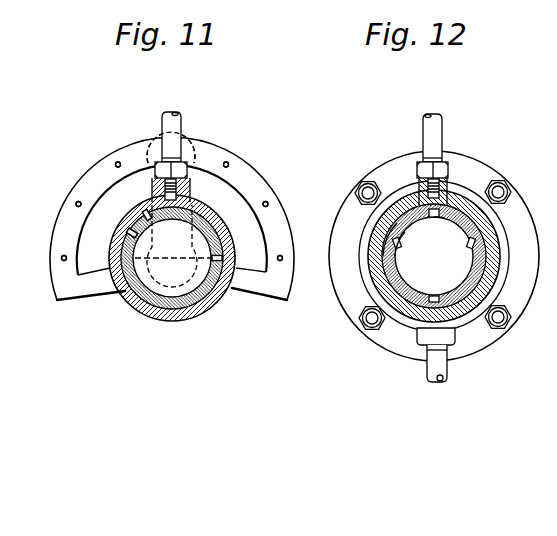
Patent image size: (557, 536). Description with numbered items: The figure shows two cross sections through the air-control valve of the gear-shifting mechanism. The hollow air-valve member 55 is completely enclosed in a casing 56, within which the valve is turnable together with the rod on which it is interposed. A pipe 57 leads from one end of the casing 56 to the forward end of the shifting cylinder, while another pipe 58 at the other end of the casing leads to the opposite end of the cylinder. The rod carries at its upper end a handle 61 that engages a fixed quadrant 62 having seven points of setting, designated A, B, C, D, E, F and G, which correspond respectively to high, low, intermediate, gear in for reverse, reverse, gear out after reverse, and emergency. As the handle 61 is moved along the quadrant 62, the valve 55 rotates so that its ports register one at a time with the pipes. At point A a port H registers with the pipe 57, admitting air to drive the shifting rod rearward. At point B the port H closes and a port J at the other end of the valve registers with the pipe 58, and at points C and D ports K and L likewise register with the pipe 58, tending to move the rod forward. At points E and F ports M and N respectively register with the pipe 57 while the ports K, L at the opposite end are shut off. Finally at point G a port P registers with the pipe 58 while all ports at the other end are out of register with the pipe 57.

In FIG. 11, the air-valve member 55 is at (138, 303).
In FIG. 12, the air-valve member 55 is at (463, 313).
In FIG. 11, the casing 56 is at (172, 310).
In FIG. 12, the casing 56 is at (410, 314).
In FIG. 11, the pipe 57 is at (170, 124).
In FIG. 12, the pipe 58 is at (431, 127).
In FIG. 11, the handle 61 is at (184, 134).
In FIG. 11, the fixed quadrant 62 is at (257, 187).
In FIG. 11, the point of setting A is at (48, 261).
In FIG. 11, the point of setting B is at (63, 200).
In FIG. 11, the point of setting C is at (109, 155).
In FIG. 11, the point of setting D is at (166, 143).
In FIG. 11, the point of setting E is at (232, 155).
In FIG. 11, the point of setting F is at (277, 200).
In FIG. 11, the point of setting G is at (294, 261).
In FIG. 11, the port H is at (222, 258).
In FIG. 11, the port M is at (143, 210).
In FIG. 11, the port N is at (128, 238).
In FIG. 12, the port J is at (501, 194).
In FIG. 12, the port K is at (413, 246).
In FIG. 12, the port L is at (434, 240).
In FIG. 12, the port P is at (383, 258).